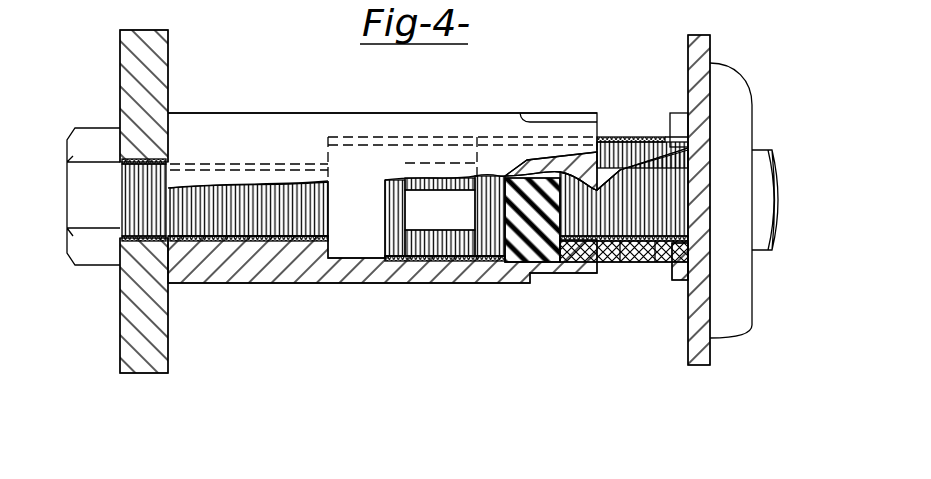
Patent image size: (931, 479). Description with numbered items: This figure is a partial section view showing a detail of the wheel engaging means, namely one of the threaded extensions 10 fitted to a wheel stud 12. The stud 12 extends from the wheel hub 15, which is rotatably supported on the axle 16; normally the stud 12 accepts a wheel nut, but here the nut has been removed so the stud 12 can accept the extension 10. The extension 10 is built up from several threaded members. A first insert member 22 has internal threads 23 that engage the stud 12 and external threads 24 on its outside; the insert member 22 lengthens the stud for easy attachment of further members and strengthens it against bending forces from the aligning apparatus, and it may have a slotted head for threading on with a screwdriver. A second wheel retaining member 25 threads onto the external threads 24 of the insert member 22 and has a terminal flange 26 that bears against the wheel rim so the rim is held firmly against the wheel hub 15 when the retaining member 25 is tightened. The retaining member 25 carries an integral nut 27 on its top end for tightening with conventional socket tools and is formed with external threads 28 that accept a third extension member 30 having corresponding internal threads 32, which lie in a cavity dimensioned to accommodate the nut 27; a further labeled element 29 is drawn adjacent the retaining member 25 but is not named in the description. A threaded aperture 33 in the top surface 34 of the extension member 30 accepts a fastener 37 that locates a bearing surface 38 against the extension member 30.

The threaded extension 10 is at (320, 79).
The stud 12 is at (697, 191).
The wheel hub 15 is at (735, 106).
The axle 16 is at (770, 222).
The first insert member 22 is at (603, 260).
The internal threads 23 is at (657, 250).
The external threads 24 is at (630, 258).
The second wheel retaining member 25 is at (643, 140).
The terminal flange 26 is at (700, 280).
The integral nut 27 is at (408, 207).
The external threads 28 is at (612, 138).
The flange 29 is at (660, 118).
The third extension member 30 is at (433, 115).
The internal threads 32 is at (527, 252).
The threaded aperture 33 is at (234, 224).
The top surface 34 is at (163, 116).
The fastener 37 is at (92, 128).
The bearing surface 38 is at (130, 311).